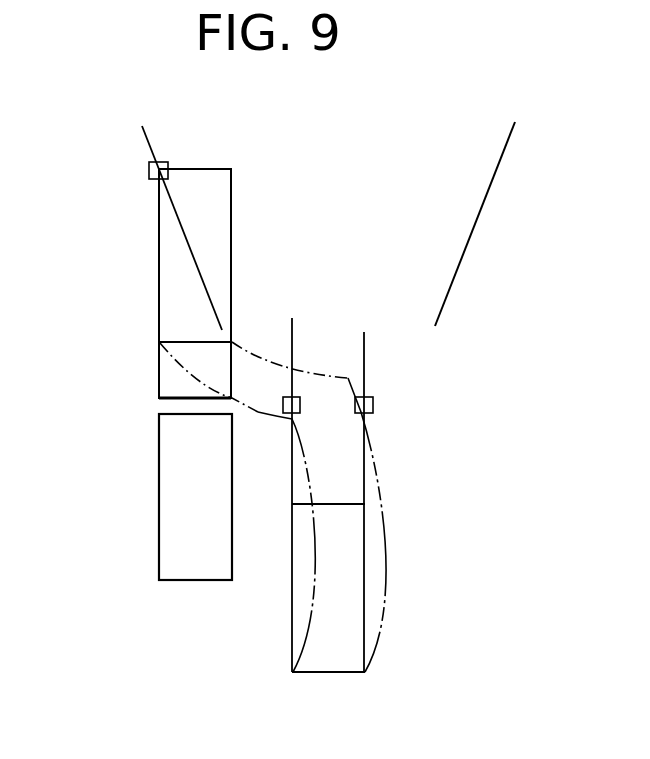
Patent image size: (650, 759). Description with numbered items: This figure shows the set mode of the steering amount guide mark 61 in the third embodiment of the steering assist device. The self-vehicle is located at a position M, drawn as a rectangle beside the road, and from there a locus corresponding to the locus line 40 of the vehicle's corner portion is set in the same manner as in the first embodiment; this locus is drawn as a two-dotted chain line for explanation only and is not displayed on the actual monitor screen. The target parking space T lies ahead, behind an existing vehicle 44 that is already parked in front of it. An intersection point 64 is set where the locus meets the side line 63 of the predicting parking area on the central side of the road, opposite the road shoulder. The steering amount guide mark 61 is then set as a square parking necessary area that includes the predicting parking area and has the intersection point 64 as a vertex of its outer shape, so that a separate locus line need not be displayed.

The target parking space T is at (207, 199).
The side line 63 is at (232, 222).
The steering amount guide mark 61 is at (150, 376).
The intersection point 64 is at (233, 397).
The locus line 40 is at (258, 413).
The position of self-vehicle M is at (293, 631).
The existing vehicle 44 is at (148, 536).